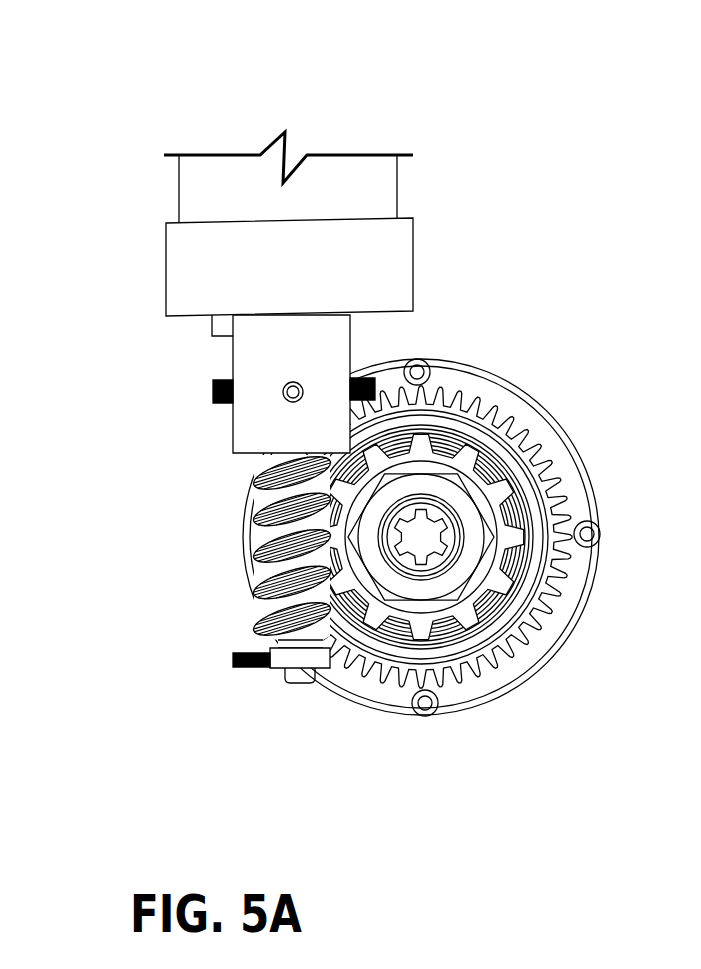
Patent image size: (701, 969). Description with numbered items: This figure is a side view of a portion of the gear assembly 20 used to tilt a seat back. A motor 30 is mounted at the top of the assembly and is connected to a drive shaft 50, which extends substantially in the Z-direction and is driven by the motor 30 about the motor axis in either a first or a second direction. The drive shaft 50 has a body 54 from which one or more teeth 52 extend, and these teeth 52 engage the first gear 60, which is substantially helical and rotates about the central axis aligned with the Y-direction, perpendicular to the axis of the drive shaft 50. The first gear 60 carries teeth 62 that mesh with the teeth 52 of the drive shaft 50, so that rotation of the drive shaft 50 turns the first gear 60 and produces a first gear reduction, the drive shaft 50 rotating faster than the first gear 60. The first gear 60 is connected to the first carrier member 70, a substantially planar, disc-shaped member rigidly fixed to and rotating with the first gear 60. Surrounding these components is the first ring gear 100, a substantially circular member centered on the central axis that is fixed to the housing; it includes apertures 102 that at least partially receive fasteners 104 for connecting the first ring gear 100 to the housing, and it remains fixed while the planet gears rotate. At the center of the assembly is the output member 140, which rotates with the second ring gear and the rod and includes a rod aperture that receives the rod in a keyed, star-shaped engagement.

The gear assembly 20 is at (513, 132).
The motor 30 is at (411, 203).
The drive shaft 50 is at (254, 492).
The teeth 52 is at (256, 566).
The body 54 is at (296, 680).
The first gear 60 is at (515, 456).
The teeth 62 is at (505, 503).
The first carrier member 70 is at (476, 617).
The first ring gear 100 is at (517, 383).
The apertures 102 is at (430, 372).
The fasteners 104 is at (418, 360).
The output member 140 is at (445, 562).